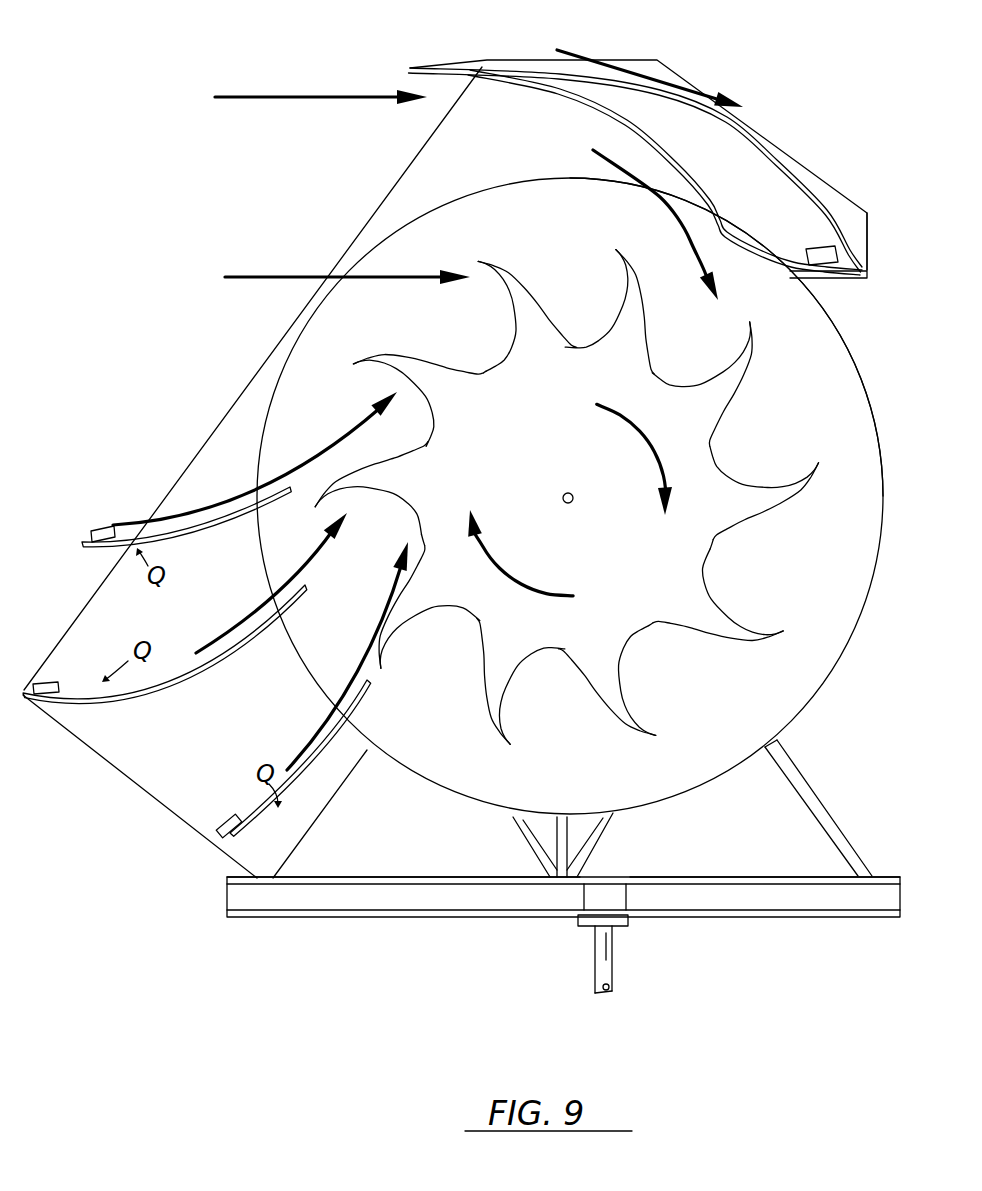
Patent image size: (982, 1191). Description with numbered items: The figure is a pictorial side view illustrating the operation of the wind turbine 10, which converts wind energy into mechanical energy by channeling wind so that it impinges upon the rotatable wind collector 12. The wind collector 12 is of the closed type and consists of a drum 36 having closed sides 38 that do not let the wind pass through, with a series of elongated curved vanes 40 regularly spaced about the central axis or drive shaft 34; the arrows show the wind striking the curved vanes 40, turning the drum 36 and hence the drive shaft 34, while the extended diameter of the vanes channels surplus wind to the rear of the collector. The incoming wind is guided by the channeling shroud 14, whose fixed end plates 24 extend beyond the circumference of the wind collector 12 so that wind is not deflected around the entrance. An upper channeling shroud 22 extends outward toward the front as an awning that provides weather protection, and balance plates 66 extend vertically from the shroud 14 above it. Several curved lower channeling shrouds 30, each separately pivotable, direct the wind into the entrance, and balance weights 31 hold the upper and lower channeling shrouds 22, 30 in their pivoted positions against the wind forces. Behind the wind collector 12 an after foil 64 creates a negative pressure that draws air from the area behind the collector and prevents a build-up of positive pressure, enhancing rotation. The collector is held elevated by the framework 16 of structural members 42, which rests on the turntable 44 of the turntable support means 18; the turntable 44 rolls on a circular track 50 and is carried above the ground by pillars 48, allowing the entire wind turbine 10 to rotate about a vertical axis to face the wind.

The wind turbine 10 is at (330, 210).
The wind collector 12 is at (544, 181).
The channeling shroud 14 is at (222, 418).
The framework 16 is at (800, 775).
The turntable support means 18 is at (531, 897).
The upper channeling shroud 22 is at (644, 150).
The end plates 24 is at (123, 774).
The lower channeling shroud 30 is at (78, 546).
The balance weights 31 is at (100, 530).
The drive shaft 34 is at (584, 480).
The drum 36 is at (570, 498).
The closed sides 38 is at (866, 386).
The curved vanes 40 is at (629, 273).
The structural members 42 is at (600, 829).
The turntable 44 is at (427, 857).
The pillars 48 is at (615, 963).
The track 50 is at (808, 877).
The after foil 64 is at (791, 218).
The balance plates 66 is at (866, 213).